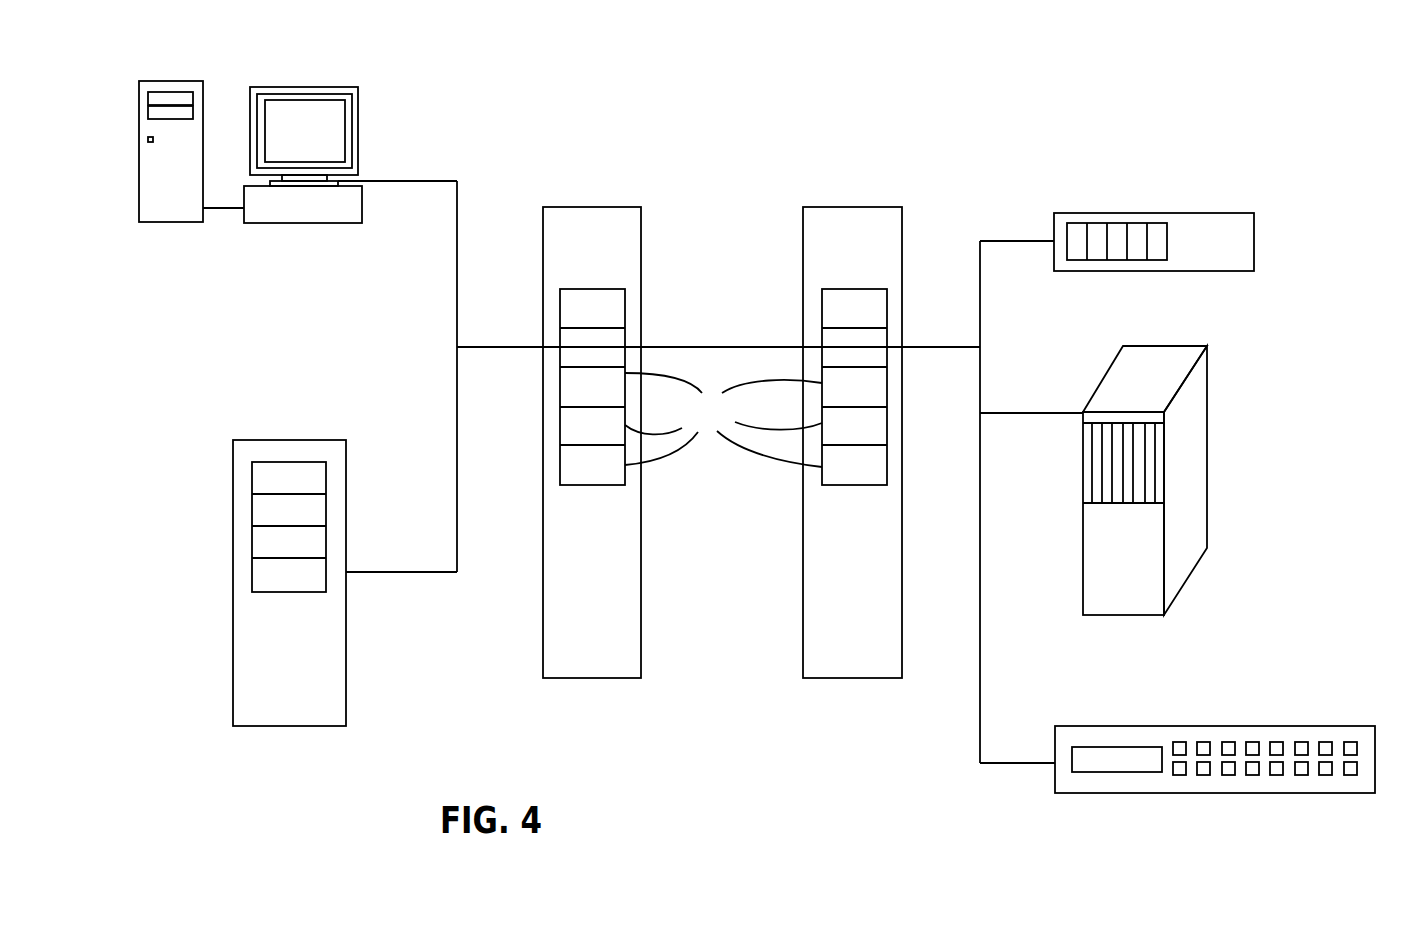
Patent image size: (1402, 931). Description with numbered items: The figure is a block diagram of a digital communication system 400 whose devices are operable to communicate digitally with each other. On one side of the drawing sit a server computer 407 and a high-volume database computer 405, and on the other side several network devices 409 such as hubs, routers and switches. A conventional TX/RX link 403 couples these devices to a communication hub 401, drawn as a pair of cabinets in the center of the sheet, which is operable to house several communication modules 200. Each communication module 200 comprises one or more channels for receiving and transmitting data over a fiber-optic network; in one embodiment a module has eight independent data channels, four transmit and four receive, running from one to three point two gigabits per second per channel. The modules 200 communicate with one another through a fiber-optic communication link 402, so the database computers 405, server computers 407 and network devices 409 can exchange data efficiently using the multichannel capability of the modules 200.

The digital communication system 400 is at (826, 100).
The communication hub 401 is at (842, 678).
The fiber-optic communication link 402 is at (690, 347).
The communication module 200 is at (723, 420).
The TX/RX link 403 is at (418, 181).
The high-volume database computer 405 is at (233, 517).
The server computer 407 is at (139, 157).
The network device 409 is at (1254, 242).